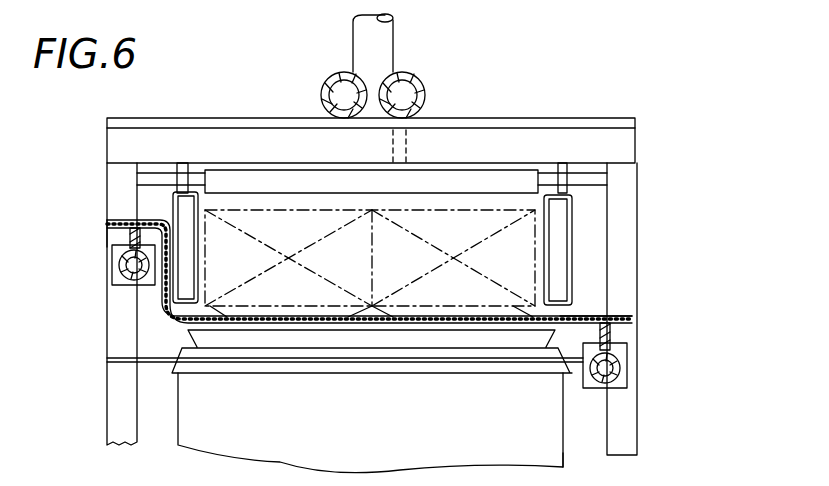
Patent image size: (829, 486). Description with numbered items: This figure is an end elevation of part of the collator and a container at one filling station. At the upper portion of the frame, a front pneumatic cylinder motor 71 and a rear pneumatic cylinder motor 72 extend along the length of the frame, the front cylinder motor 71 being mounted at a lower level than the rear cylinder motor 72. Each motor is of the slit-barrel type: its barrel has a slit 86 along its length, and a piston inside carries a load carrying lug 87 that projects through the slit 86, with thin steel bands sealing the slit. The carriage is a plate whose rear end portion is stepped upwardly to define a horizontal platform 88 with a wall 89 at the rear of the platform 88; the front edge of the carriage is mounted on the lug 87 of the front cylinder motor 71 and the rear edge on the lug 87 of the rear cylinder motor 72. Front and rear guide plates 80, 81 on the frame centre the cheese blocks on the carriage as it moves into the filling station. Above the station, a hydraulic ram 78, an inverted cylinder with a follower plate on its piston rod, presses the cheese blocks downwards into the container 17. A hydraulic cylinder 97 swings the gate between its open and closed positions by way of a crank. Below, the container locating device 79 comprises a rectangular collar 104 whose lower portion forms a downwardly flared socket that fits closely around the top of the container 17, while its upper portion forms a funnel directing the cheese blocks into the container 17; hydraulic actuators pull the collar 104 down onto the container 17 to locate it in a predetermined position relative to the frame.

The hydraulic ram 78 is at (375, 41).
The hydraulic cylinder 97 is at (326, 91).
The rear guide plate 81 is at (150, 206).
The front guide plate 80 is at (575, 220).
The load carrying lug 87 is at (128, 238).
The rear pneumatic cylinder motor 72 is at (119, 266).
The front pneumatic cylinder motor 71 is at (613, 378).
The slit 86 is at (120, 287).
The wall 89 is at (163, 308).
The horizontal platform 88 is at (583, 321).
The container locating device 79 is at (158, 362).
The rectangular collar 104 is at (255, 377).
The container 17 is at (563, 453).